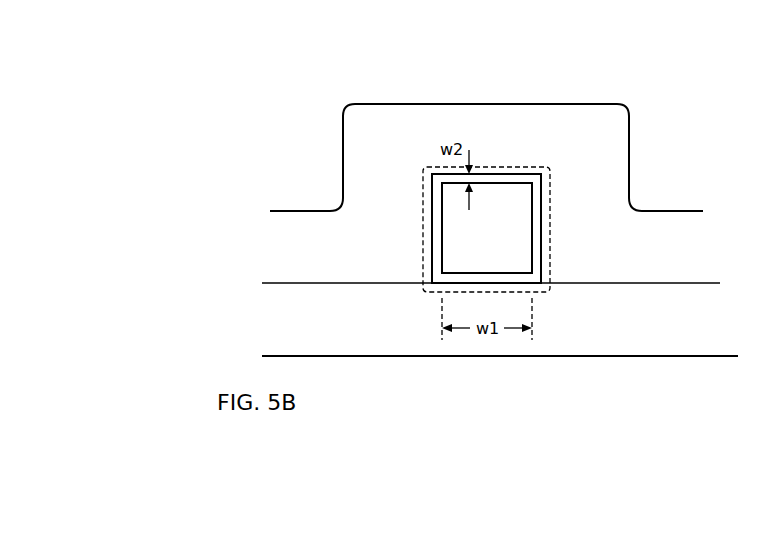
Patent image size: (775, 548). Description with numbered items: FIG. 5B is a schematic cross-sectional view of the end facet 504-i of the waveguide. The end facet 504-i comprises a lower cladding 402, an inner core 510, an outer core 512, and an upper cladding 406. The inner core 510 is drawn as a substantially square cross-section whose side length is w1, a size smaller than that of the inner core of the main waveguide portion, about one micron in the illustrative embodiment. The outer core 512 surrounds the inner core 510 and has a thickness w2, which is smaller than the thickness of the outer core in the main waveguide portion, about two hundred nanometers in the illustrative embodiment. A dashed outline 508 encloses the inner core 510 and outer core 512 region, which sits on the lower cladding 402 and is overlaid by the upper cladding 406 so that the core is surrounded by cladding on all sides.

The end facet 504-i is at (296, 74).
The upper cladding 406 is at (332, 265).
The lower cladding 402 is at (332, 336).
The region 508 is at (513, 166).
The inner core 510 is at (485, 261).
The outer core 512 is at (537, 265).